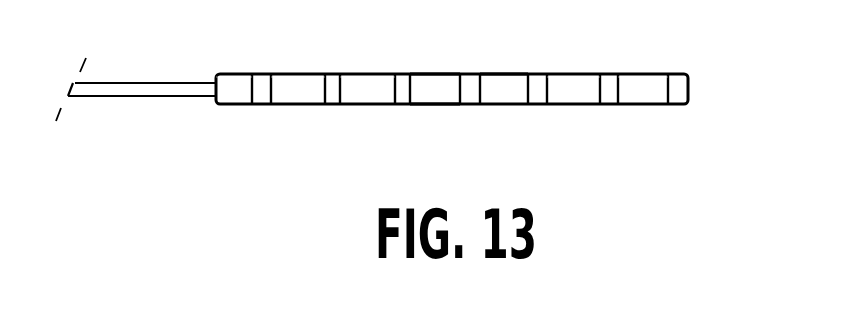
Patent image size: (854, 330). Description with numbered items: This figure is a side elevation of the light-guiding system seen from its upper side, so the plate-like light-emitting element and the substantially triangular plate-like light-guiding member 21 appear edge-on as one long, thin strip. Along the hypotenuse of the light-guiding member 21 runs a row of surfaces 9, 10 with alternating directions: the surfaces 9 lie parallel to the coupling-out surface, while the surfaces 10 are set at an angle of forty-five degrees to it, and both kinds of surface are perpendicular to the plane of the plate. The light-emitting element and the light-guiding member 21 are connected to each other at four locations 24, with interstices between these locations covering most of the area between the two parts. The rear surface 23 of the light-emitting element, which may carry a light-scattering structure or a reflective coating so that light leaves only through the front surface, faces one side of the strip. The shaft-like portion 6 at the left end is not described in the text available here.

The shaft 6 is at (147, 80).
The surface 9 is at (370, 87).
The surface 10 is at (262, 88).
The light-guiding member 21 is at (510, 88).
The rear surface 23 is at (441, 98).
The location 24 is at (438, 88).